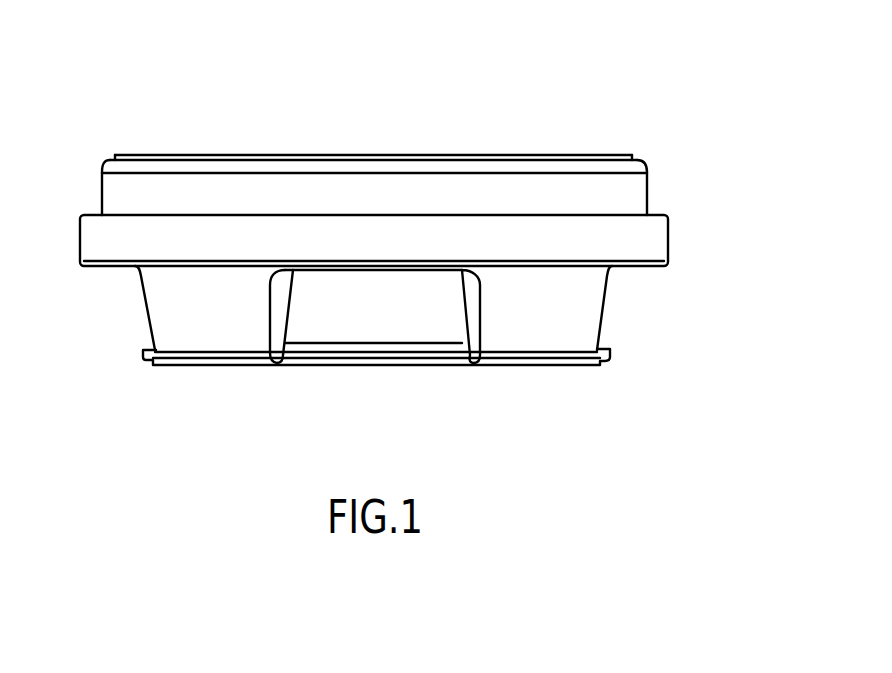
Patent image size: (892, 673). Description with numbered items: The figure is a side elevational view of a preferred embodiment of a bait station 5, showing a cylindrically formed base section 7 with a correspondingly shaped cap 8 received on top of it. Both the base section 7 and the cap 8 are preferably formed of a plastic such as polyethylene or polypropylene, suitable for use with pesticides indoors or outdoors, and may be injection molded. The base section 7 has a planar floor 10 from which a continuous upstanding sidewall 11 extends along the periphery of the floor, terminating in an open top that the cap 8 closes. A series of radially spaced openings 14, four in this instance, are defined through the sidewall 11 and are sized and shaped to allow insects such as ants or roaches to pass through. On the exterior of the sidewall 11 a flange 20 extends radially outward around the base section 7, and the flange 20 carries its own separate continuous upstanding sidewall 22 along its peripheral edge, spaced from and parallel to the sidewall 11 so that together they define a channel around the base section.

The bait station 5 is at (645, 76).
The base section 7 is at (152, 379).
The cap 8 is at (122, 148).
The planar floor 10 is at (403, 347).
The sidewall 11 is at (585, 313).
The openings 14 is at (325, 310).
The flange 20 is at (87, 270).
The upstanding sidewall of flange 22 is at (669, 237).